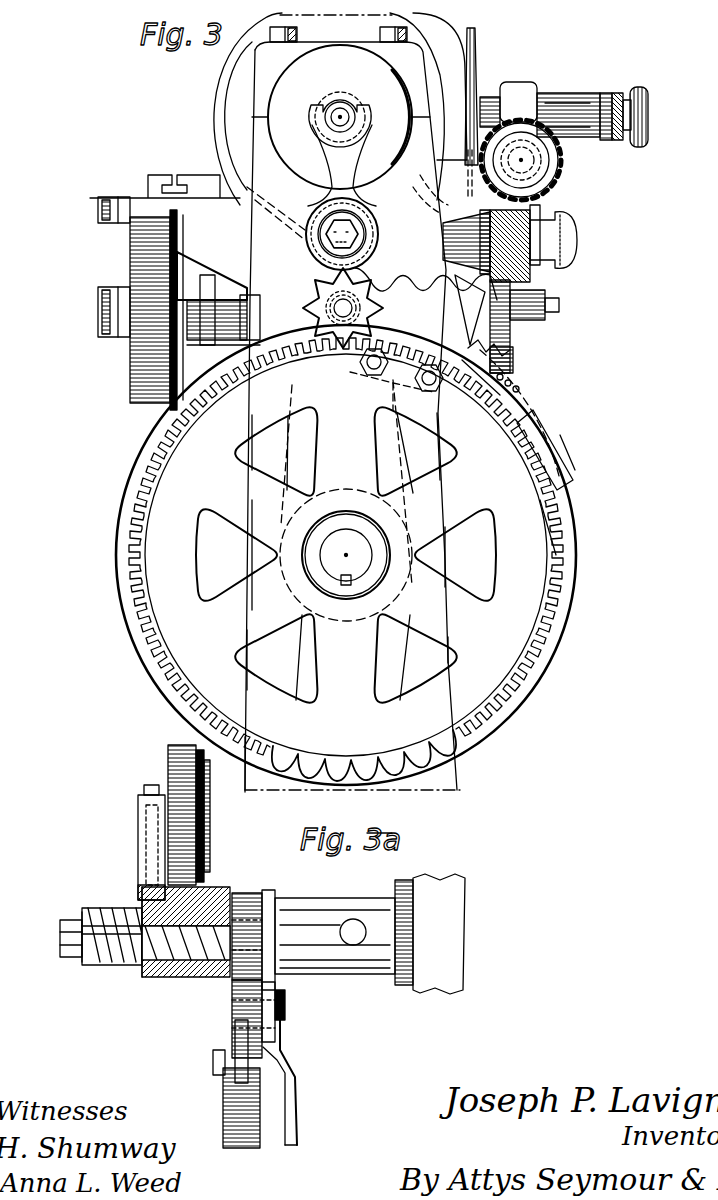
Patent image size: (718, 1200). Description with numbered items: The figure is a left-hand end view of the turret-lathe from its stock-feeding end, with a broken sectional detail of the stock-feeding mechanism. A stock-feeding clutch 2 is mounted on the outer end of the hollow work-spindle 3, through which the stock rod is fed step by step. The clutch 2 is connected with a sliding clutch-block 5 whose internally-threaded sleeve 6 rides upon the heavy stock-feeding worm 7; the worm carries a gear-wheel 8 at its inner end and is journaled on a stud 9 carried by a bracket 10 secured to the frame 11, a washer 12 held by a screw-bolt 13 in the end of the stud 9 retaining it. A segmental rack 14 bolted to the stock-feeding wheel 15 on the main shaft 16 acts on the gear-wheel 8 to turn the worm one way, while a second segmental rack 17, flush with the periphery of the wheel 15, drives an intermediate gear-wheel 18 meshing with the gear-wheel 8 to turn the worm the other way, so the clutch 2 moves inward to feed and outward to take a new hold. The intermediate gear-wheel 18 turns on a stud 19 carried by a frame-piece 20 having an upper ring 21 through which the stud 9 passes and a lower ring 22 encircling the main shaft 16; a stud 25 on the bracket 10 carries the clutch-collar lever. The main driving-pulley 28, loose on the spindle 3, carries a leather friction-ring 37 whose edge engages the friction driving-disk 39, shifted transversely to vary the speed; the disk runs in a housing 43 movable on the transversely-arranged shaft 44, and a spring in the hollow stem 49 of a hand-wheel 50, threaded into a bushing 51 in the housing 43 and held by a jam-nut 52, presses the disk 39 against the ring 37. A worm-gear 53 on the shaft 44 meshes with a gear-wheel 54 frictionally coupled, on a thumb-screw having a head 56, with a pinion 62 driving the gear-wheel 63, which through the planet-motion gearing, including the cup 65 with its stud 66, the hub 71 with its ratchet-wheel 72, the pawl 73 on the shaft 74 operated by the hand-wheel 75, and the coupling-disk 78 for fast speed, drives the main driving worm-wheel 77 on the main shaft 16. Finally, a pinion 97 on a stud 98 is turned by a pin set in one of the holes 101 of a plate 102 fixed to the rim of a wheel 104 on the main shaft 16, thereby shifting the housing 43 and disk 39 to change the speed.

In FIG. 3, the stock-feeding clutch 2 is at (318, 124).
In FIG. 3A, the stock-feeding clutch 2 is at (140, 828).
In FIG. 3, the hollow work-spindle 3 is at (342, 103).
In FIG. 3A, the hollow work-spindle 3 is at (172, 800).
In FIG. 3, the sliding clutch-block 5 is at (330, 232).
In FIG. 3A, the sliding clutch-block 5 is at (166, 976).
In FIG. 3A, the internally-threaded sleeve 6 is at (212, 977).
In FIG. 3A, the stock-feeding worm 7 is at (115, 964).
In FIG. 3, the gear-wheel 8 is at (368, 238).
In FIG. 3A, the gear-wheel 8 is at (245, 896).
In FIG. 3A, the stud 9 is at (258, 905).
In FIG. 3A, the bracket 10 is at (335, 936).
In FIG. 3, the frame 11 is at (358, 408).
In FIG. 3A, the frame 11 is at (430, 934).
In FIG. 3, the washer 12 is at (352, 220).
In FIG. 3A, the washer 12 is at (78, 960).
In FIG. 3, the screw-bolt 13 is at (338, 248).
In FIG. 3A, the screw-bolt 13 is at (62, 938).
In FIG. 3, the segmental rack 14 is at (426, 289).
In FIG. 3A, the segmental rack 14 is at (237, 1006).
In FIG. 3, the stock-feeding wheel 15 is at (346, 555).
In FIG. 3A, the stock-feeding wheel 15 is at (224, 1106).
In FIG. 3, the main shaft 16 is at (346, 555).
In FIG. 3, the segmental rack 17 is at (283, 770).
In FIG. 3, the intermediate gear-wheel 18 is at (318, 336).
In FIG. 3A, the intermediate gear-wheel 18 is at (265, 1031).
In FIG. 3, the stud 19 is at (336, 306).
In FIG. 3A, the stud 19 is at (285, 1005).
In FIG. 3, the frame-piece 20 is at (288, 445).
In FIG. 3A, the frame-piece 20 is at (290, 1062).
In FIG. 3A, the ring 21 is at (276, 898).
In FIG. 3, the ring 22 is at (342, 486).
In FIG. 3A, the stud 25 is at (353, 930).
In FIG. 3, the main driving-pulley 28 is at (214, 141).
In FIG. 3, the friction-ring 37 is at (216, 108).
In FIG. 3, the friction driving-disk 39 is at (476, 62).
In FIG. 3, the housing 43 is at (488, 100).
In FIG. 3, the transversely-arranged shaft 44 is at (519, 162).
In FIG. 3, the hollow stem 49 is at (625, 136).
In FIG. 3, the hand-wheel 50 is at (638, 87).
In FIG. 3, the bushing 51 is at (607, 93).
In FIG. 3, the jam-nut 52 is at (615, 92).
In FIG. 3, the worm-gear 53 is at (560, 172).
In FIG. 3, the gear-wheel 54 is at (531, 275).
In FIG. 3, the head 56 is at (573, 236).
In FIG. 3, the pinion 62 is at (480, 244).
In FIG. 3, the gear-wheel 63 is at (511, 336).
In FIG. 3, the cup 65 is at (131, 364).
In FIG. 3, the stud 66 is at (130, 241).
In FIG. 3, the projecting hub 71 is at (197, 293).
In FIG. 3, the ratchet-wheel 72 is at (208, 344).
In FIG. 3, the pawl 73 is at (205, 325).
In FIG. 3, the shaft 74 is at (240, 312).
In FIG. 3, the hand-wheel 75 is at (455, 276).
In FIG. 3, the main driving worm-wheel 77 is at (562, 554).
In FIG. 3, the coupling-disk 78 is at (547, 300).
In FIG. 3, the pinion 97 is at (514, 362).
In FIG. 3, the stud 98 is at (468, 356).
In FIG. 3, the holes 101 is at (521, 386).
In FIG. 3, the plate 102 is at (523, 398).
In FIG. 3, the wheel 104 is at (560, 491).